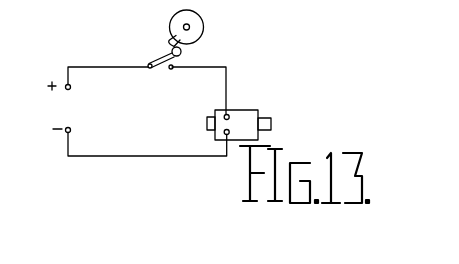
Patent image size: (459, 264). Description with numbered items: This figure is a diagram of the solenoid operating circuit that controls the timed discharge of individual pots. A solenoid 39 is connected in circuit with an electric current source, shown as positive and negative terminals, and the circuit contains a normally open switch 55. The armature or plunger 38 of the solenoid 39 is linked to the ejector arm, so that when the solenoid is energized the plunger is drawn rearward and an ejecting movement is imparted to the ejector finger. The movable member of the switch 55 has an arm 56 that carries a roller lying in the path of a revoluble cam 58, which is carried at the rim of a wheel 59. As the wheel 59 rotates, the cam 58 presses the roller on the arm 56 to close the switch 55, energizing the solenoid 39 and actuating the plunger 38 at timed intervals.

The plunger 38 is at (266, 117).
The solenoid 39 is at (245, 119).
The normally open switch 55 is at (159, 68).
The arm 56 is at (147, 61).
The revoluble cam 58 is at (168, 42).
The wheel 59 is at (204, 28).